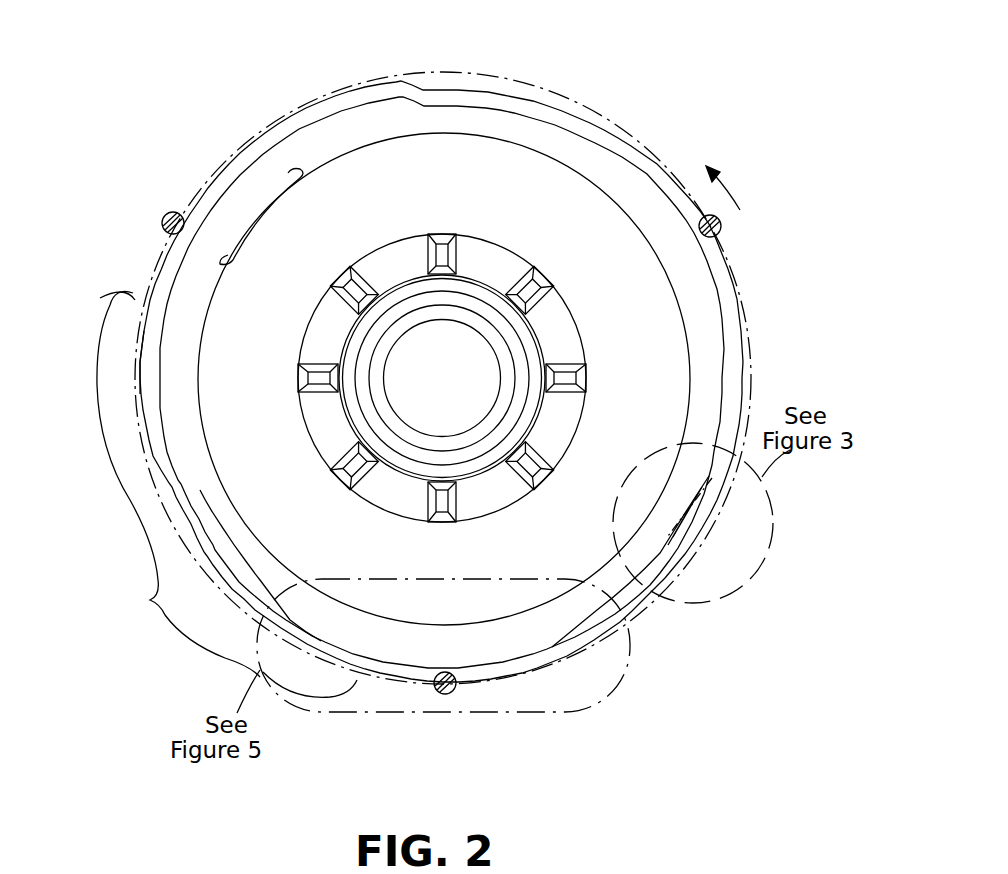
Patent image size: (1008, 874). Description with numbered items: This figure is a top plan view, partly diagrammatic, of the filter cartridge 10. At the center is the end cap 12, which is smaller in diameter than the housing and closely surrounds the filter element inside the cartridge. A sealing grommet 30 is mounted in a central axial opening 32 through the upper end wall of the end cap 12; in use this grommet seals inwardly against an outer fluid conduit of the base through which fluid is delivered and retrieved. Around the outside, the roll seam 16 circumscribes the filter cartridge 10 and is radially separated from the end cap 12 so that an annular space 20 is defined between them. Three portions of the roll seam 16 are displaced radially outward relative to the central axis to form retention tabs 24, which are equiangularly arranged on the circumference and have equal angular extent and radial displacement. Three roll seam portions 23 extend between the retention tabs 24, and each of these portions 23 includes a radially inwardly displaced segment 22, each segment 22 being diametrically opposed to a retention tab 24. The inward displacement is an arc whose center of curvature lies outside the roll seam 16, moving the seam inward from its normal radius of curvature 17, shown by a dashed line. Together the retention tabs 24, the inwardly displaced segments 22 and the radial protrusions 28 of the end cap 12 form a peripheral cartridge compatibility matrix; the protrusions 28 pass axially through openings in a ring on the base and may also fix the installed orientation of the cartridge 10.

The filter cartridge 10 is at (587, 78).
The end cap 12 is at (562, 216).
The roll seam 16 is at (136, 352).
The normal radius of curvature 17 is at (697, 512).
The annular space 20 is at (335, 136).
The inwardly displaced segment 22 is at (433, 87).
The roll seam portion 23 is at (178, 485).
The retention tab 24 is at (172, 211).
The radial protrusion 28 is at (266, 196).
The sealing grommet 30 is at (572, 422).
The central axial opening 32 is at (398, 400).